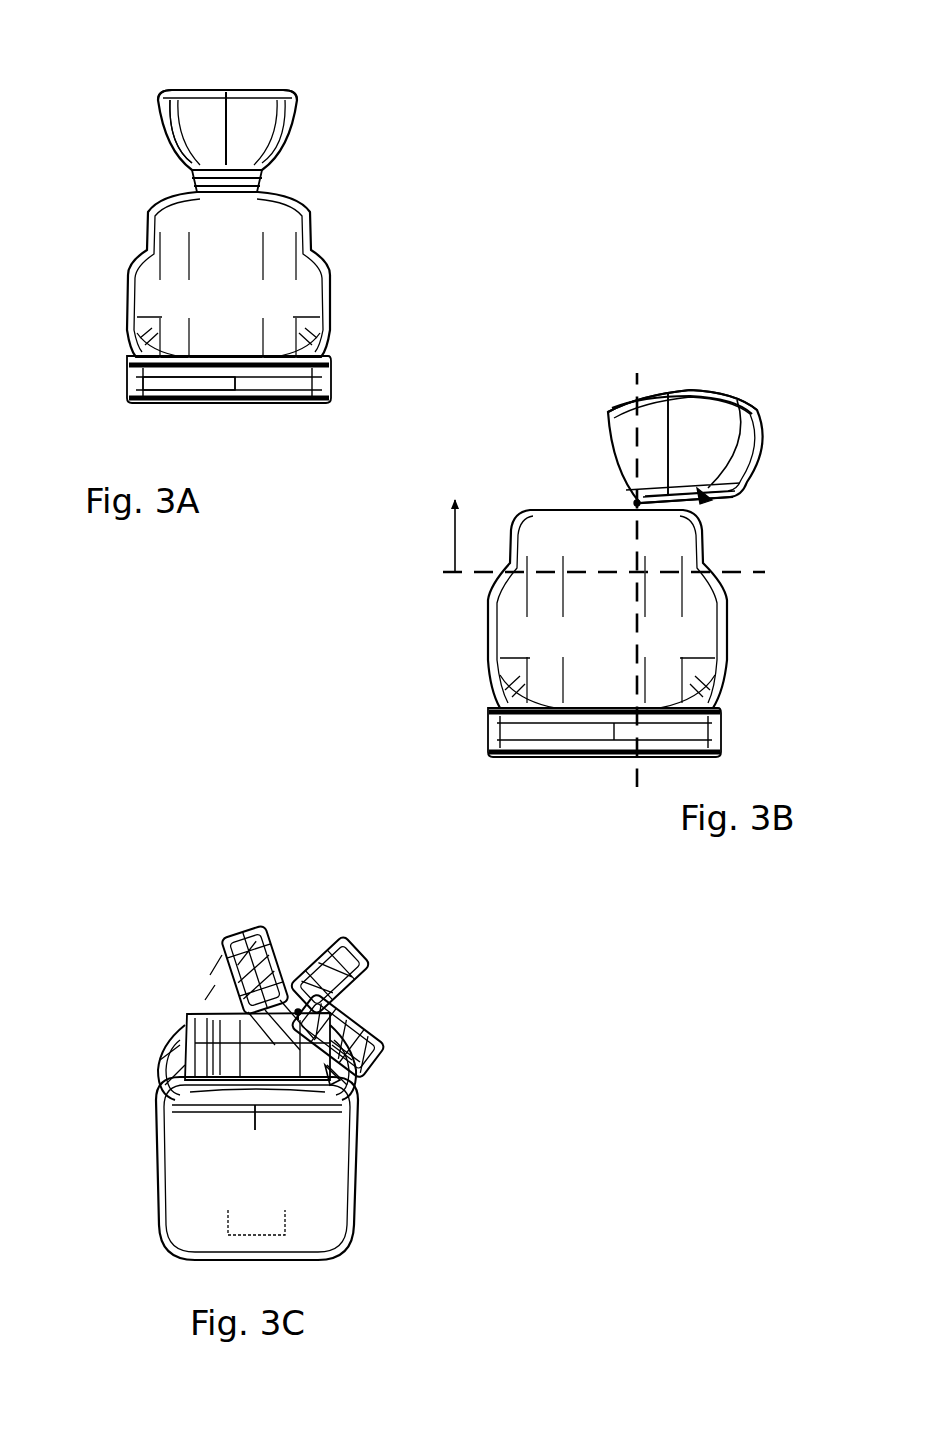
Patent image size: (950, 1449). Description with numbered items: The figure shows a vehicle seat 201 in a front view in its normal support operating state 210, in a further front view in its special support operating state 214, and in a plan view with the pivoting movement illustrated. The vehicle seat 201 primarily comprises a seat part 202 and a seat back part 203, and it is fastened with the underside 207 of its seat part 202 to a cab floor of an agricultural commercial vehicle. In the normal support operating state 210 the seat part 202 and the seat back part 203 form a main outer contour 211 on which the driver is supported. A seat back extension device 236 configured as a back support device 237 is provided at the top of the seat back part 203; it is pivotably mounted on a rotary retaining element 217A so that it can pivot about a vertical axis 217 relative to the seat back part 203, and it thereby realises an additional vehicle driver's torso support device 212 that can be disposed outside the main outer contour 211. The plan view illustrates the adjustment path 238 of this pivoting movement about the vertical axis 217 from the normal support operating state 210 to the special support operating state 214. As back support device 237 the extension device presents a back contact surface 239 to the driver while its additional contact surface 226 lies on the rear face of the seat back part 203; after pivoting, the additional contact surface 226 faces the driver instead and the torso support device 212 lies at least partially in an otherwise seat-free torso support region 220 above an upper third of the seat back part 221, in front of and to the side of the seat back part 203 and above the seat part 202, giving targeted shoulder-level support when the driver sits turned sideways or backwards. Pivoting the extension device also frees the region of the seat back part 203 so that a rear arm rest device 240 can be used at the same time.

In FIG. 3A, the vehicle seat 201 is at (105, 145).
In FIG. 3B, the vehicle seat 201 is at (768, 302).
In FIG. 3C, the vehicle seat 201 is at (165, 962).
In FIG. 3A, the seat part 202 is at (185, 400).
In FIG. 3B, the seat part 202 is at (500, 736).
In FIG. 3C, the seat part 202 is at (257, 1168).
In FIG. 3C, the seat back part 203 is at (172, 1078).
In FIG. 3A, the underside 207 is at (205, 406).
In FIG. 3A, the normal support operating state 210 is at (410, 186).
In FIG. 3A, the main outer contour 211 is at (143, 226).
In FIG. 3A, the additional vehicle driver's torso support device 212 is at (322, 110).
In FIG. 3B, the additional vehicle driver's torso support device 212 is at (757, 436).
In FIG. 3C, the additional vehicle driver's torso support device 212 is at (377, 1130).
In FIG. 3B, the special support operating state 214 is at (664, 338).
In FIG. 3B, the vertical axis 217 is at (630, 790).
In FIG. 3C, the vertical axis 217 is at (300, 1020).
In FIG. 3B, the rotary retaining element 217A is at (635, 502).
In FIG. 3C, the rotary retaining element 217A is at (302, 1010).
In FIG. 3A, the otherwise seat-free torso support region 220 is at (268, 152).
In FIG. 3B, the otherwise seat-free torso support region 220 is at (758, 512).
In FIG. 3B, the upper third of the seat back part 221 is at (417, 536).
In FIG. 3B, the additional contact surface 226 is at (698, 410).
In FIG. 3C, the additional contact surface 226 is at (330, 1072).
In FIG. 3A, the seat back extension device 236 is at (295, 78).
In FIG. 3B, the seat back extension device 236 is at (782, 385).
In FIG. 3C, the seat back extension device 236 is at (265, 890).
In FIG. 3A, the back support device 237 is at (210, 118).
In FIG. 3C, the adjustment path 238 is at (352, 933).
In FIG. 3A, the back contact surface 239 is at (234, 148).
In FIG. 3C, the back contact surface 239 is at (382, 1044).
In FIG. 3B, the rear arm rest device 240 is at (575, 505).